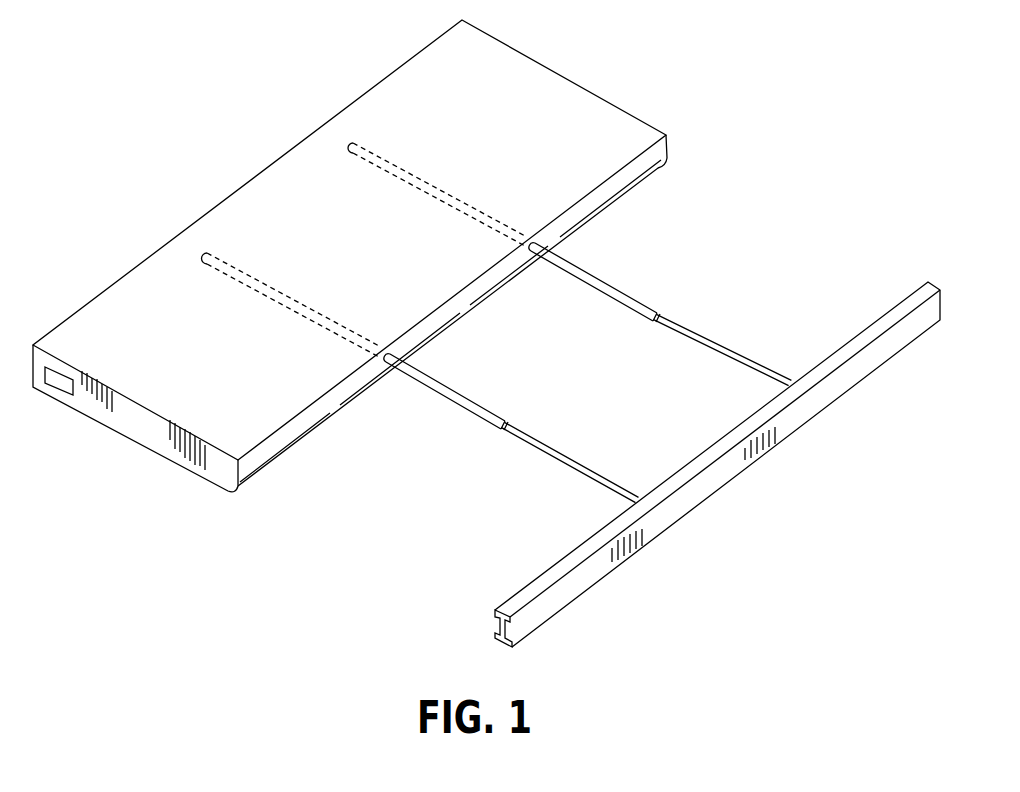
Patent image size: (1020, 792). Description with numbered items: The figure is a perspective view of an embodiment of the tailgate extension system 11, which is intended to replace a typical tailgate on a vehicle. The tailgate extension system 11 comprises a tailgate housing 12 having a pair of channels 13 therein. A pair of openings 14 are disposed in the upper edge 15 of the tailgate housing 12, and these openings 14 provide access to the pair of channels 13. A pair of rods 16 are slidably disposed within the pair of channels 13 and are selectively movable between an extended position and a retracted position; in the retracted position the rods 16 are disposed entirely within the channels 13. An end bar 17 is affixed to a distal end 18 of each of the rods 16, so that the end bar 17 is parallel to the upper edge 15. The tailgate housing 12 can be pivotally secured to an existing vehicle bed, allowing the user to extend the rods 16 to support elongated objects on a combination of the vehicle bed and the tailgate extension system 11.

The tailgate extension system 11 is at (250, 133).
The tailgate housing 12 is at (547, 103).
The pair of channels 13 is at (223, 257).
The pair of openings 14 is at (390, 365).
The upper edge 15 is at (650, 180).
The pair of rods 16 is at (466, 484).
The end bar 17 is at (880, 323).
The distal end 18 is at (790, 383).